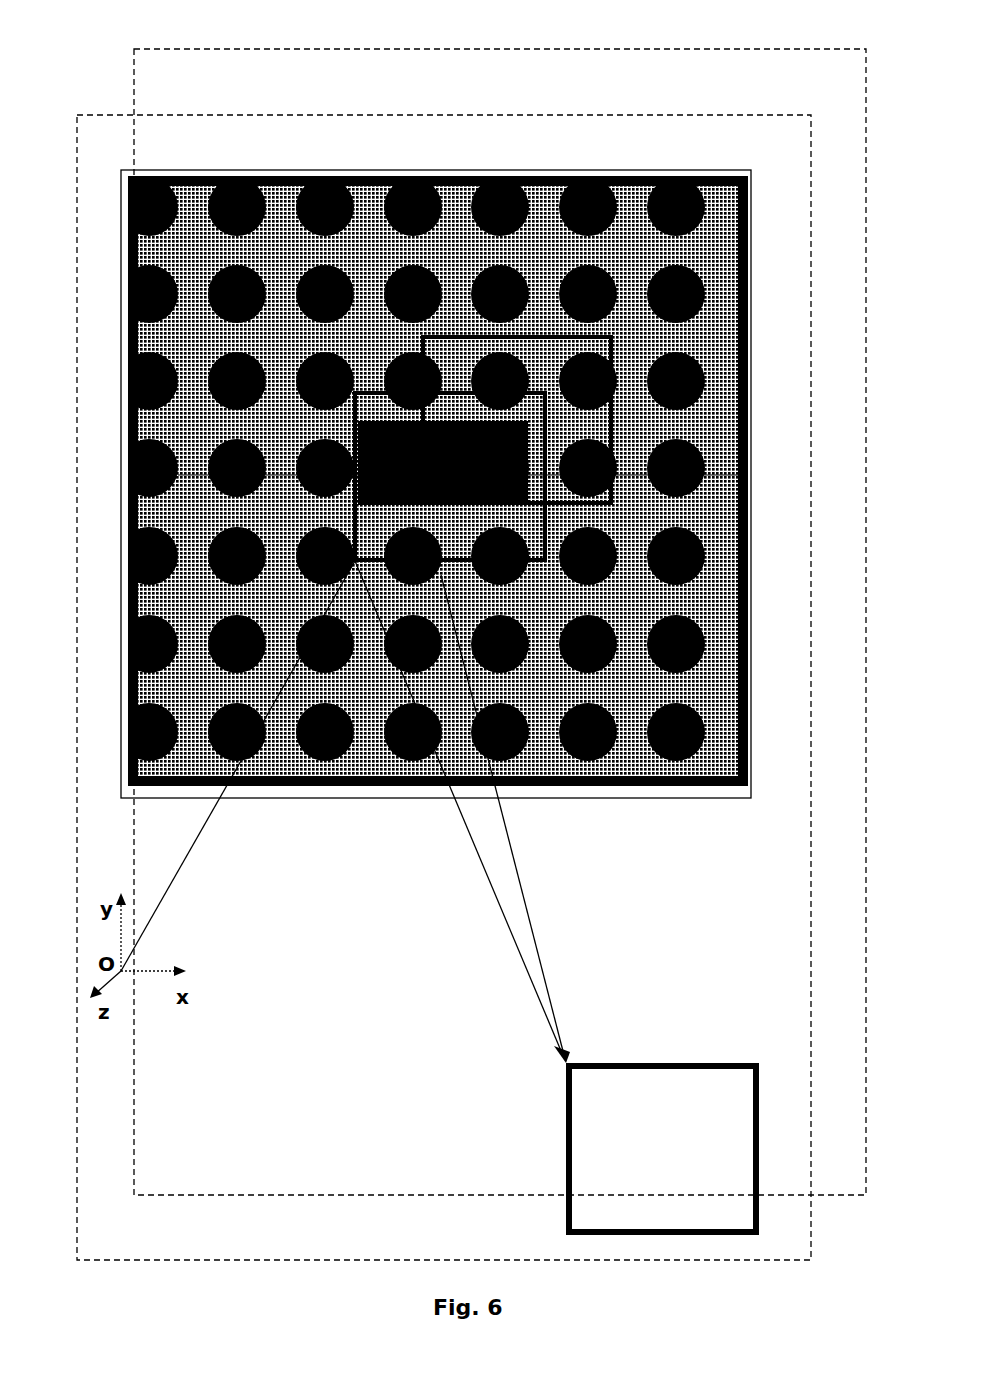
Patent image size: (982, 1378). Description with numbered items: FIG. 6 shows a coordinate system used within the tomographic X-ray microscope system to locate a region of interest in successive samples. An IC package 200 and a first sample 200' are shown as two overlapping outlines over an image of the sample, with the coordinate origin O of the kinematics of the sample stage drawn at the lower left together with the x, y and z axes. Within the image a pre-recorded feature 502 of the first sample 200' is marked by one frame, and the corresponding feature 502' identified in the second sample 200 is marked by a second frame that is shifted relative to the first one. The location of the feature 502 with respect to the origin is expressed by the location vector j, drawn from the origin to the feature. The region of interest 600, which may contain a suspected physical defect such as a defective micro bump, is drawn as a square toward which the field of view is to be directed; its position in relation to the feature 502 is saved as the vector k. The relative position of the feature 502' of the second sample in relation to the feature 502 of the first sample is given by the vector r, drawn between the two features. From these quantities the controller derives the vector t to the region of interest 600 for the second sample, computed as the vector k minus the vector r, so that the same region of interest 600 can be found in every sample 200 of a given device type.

The IC package 200 is at (461, 622).
The sample 200' is at (415, 687).
The feature 502 is at (428, 308).
The feature 502' is at (517, 279).
The region of interest 600 is at (662, 1055).
The vector r is at (300, 456).
The vector j is at (238, 766).
The vector k is at (459, 809).
The vector t is at (507, 855).